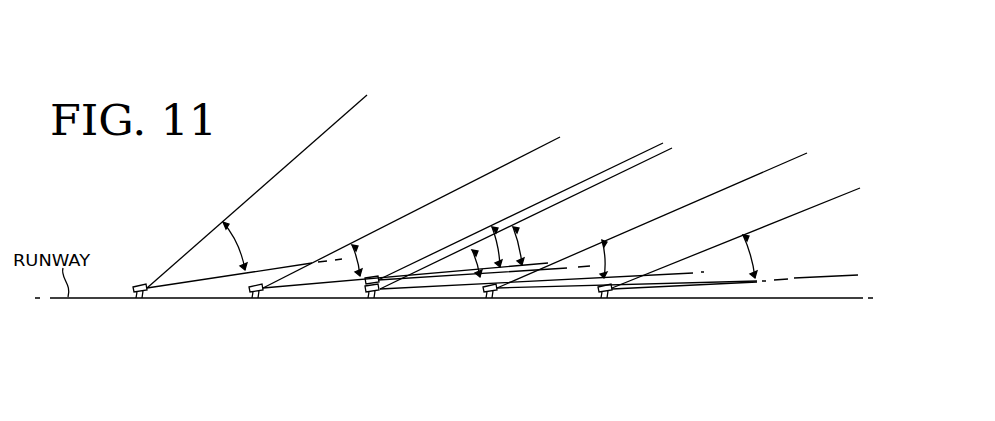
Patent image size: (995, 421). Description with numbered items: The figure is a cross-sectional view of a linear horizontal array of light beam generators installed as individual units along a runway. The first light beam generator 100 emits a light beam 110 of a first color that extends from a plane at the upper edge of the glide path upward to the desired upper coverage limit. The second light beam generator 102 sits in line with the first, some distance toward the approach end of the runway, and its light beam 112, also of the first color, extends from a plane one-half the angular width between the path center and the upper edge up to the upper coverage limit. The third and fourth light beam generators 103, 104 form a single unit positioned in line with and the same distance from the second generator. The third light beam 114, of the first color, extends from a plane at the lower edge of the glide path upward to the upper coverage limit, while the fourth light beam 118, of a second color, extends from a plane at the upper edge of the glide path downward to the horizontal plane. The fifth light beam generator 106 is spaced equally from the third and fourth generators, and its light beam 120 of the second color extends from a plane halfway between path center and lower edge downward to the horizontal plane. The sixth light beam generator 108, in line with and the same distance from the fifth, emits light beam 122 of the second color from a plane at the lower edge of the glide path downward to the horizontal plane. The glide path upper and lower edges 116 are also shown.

The first light beam generator 100 is at (134, 292).
The second light beam generator 102 is at (249, 292).
The third light beam generator 103 is at (366, 283).
The fourth light beam generator 104 is at (369, 293).
The fifth light beam generator 106 is at (487, 292).
The sixth light beam generator 108 is at (601, 292).
The light beam 110 is at (243, 250).
The light beam 112 is at (360, 258).
The third light beam 114 is at (497, 248).
The glide path upper and lower edges 116 is at (518, 248).
The fourth light beam 118 is at (476, 253).
The light beam 120 is at (606, 257).
The light beam 122 is at (752, 256).